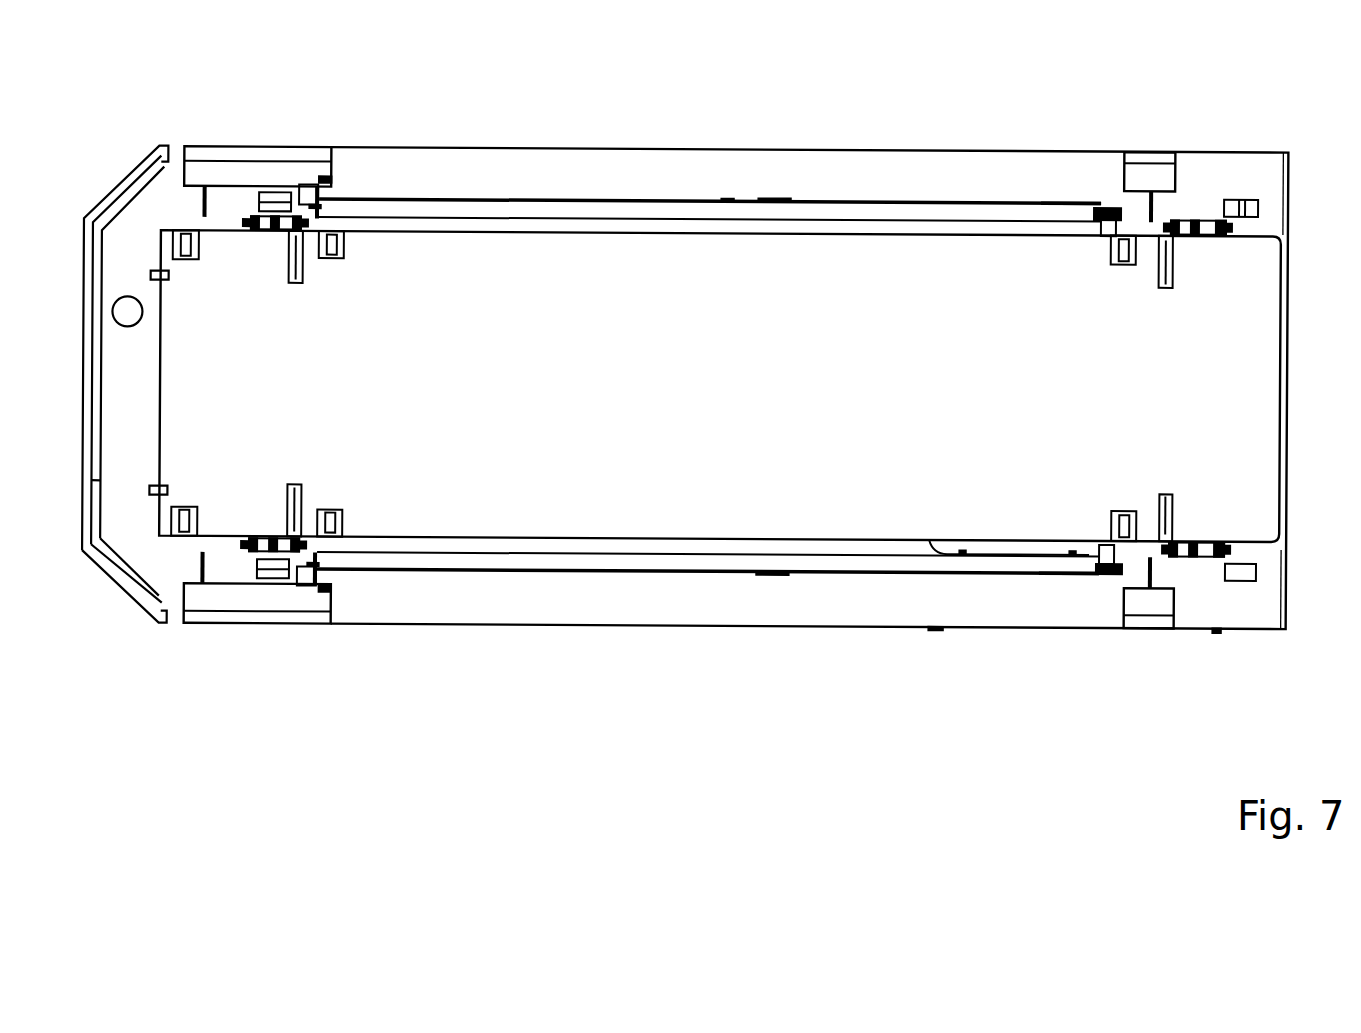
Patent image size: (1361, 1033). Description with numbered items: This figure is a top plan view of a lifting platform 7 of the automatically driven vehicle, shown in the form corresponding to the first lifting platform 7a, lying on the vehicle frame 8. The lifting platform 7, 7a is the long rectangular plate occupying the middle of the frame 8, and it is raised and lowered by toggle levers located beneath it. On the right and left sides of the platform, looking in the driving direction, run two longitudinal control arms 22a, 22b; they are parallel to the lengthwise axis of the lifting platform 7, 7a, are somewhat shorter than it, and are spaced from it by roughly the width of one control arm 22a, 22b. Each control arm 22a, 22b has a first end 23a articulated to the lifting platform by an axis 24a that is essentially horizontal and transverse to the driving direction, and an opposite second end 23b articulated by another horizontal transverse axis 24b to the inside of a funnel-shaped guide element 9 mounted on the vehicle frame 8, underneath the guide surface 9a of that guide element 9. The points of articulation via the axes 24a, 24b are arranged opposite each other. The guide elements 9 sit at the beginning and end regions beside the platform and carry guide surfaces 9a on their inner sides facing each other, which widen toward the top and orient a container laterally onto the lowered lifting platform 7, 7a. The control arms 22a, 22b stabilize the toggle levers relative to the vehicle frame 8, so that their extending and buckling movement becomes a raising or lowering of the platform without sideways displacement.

The lifting platform 7 is at (720, 295).
The first lifting platform 7a is at (720, 295).
The vehicle frame 8 is at (809, 341).
The guide element 9 is at (680, 339).
The guide surface 9a is at (731, 332).
The longitudinal control arm 22a is at (708, 614).
The longitudinal control arm 22b is at (710, 135).
The first end of longitudinal control arm 23a is at (362, 368).
The second end of longitudinal control arm 23b is at (995, 371).
The axis 24a is at (384, 385).
The axis 24b is at (1088, 371).